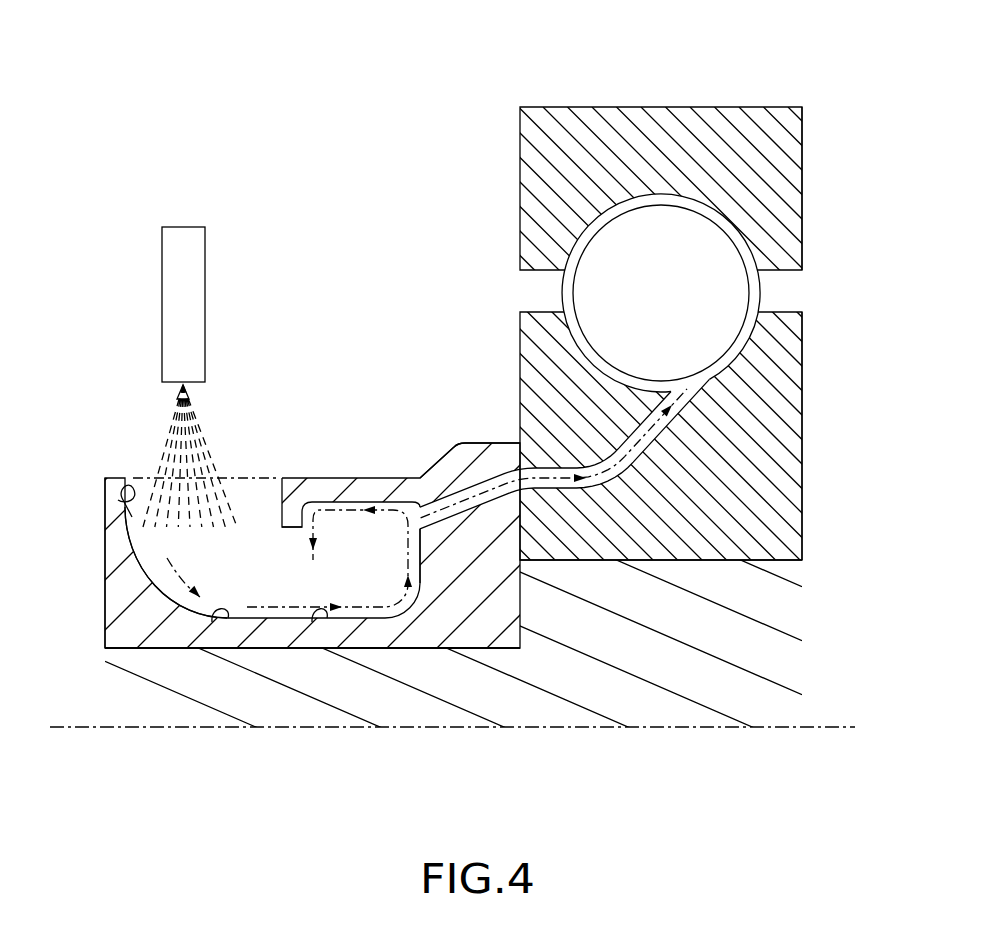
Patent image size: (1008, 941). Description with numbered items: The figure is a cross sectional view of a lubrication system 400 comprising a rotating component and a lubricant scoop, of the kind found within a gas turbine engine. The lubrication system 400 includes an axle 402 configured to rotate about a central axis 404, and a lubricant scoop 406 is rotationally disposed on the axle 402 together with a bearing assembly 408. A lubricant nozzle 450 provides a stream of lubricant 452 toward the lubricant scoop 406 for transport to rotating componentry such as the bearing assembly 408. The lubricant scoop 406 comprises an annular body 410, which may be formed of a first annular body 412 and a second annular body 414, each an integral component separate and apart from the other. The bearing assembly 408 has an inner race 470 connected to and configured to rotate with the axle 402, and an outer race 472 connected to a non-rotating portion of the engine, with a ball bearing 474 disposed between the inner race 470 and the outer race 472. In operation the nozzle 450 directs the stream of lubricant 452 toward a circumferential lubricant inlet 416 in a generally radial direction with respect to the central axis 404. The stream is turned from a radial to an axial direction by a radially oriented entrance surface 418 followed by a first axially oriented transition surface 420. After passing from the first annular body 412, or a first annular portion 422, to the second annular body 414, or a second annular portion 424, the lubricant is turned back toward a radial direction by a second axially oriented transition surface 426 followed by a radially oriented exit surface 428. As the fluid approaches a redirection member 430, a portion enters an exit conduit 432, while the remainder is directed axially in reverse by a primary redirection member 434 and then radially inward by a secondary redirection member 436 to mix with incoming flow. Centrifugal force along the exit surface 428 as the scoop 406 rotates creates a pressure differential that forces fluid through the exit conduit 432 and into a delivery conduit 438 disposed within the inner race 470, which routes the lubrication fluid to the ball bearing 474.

The lubrication system 400 is at (213, 79).
The axle 402 is at (238, 693).
The central axis 404 is at (832, 727).
The lubricant scoop 406 is at (96, 477).
The bearing assembly 408 is at (850, 208).
The annular body 410 is at (94, 566).
The first annular body 412 is at (105, 590).
The second annular body 414 is at (484, 443).
The circumferential lubricant inlet 416 is at (237, 478).
The radially oriented entrance surface 418 is at (118, 500).
The first axially oriented transition surface 420 is at (212, 622).
The first annular portion 422 is at (105, 625).
The second annular portion 424 is at (408, 652).
The second axially oriented transition surface 426 is at (312, 622).
The radially oriented exit surface 428 is at (421, 543).
The redirection member 430 is at (386, 478).
The exit conduit 432 is at (462, 490).
The primary redirection member 434 is at (338, 478).
The secondary redirection member 436 is at (279, 479).
The delivery conduit 438 is at (660, 434).
The lubricant nozzle 450 is at (206, 250).
The stream of lubricant 452 is at (136, 415).
The inner race 470 is at (802, 436).
The outer race 472 is at (748, 107).
The ball bearing 474 is at (760, 292).